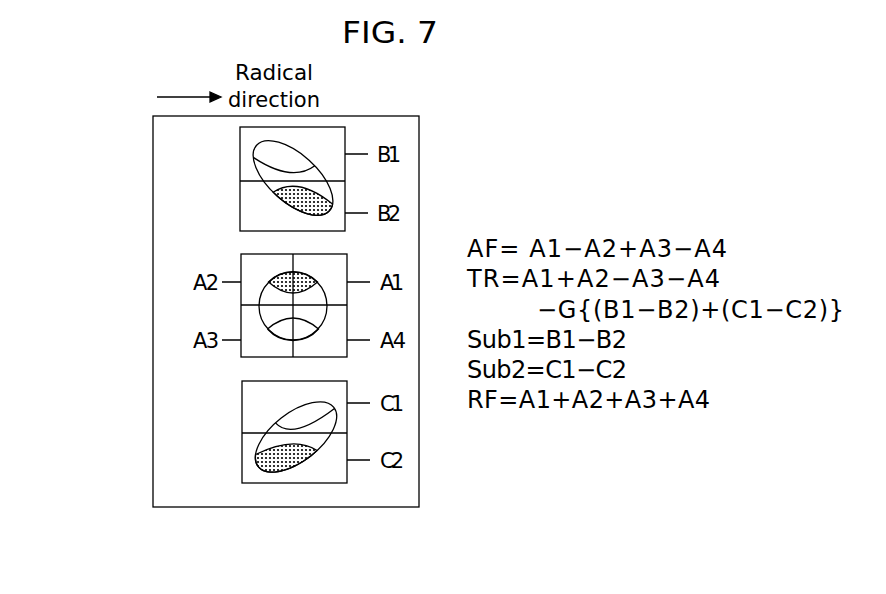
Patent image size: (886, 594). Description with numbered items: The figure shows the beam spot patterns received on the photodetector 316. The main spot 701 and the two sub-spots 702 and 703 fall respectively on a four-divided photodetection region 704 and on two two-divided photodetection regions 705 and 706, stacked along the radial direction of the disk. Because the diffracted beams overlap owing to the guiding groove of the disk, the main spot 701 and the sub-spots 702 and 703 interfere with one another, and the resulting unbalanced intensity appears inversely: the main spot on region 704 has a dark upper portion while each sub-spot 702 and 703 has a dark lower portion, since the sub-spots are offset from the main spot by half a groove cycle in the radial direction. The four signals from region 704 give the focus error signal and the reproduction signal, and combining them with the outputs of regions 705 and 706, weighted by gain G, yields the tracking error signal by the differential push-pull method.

The photodetector 316 is at (153, 232).
The main spot 701 is at (240, 352).
The sub-spot 702 is at (320, 178).
The sub-spot 703 is at (277, 470).
The four-divided photodetection region 704 is at (240, 293).
The two-divided photodetection region 705 is at (343, 198).
The two-divided photodetection region 706 is at (320, 483).